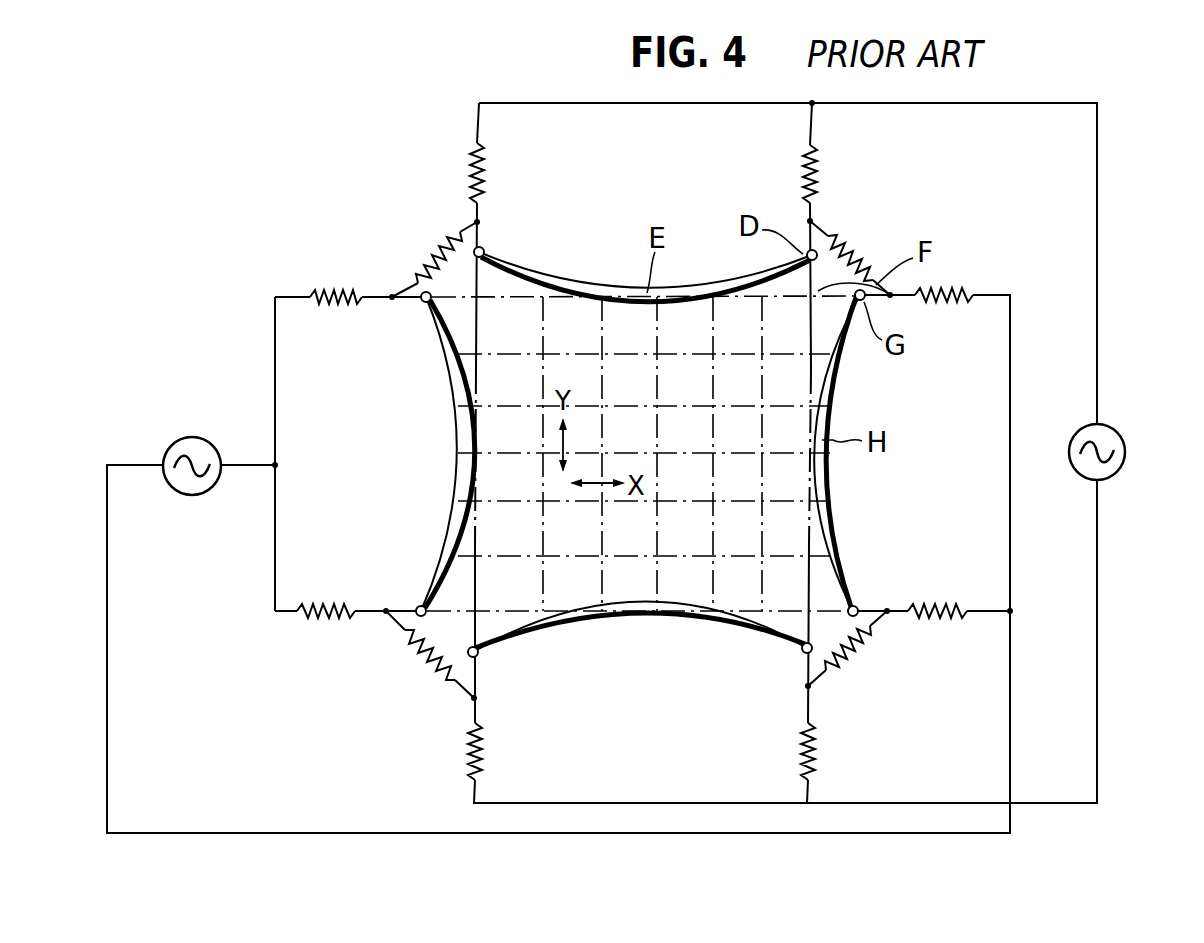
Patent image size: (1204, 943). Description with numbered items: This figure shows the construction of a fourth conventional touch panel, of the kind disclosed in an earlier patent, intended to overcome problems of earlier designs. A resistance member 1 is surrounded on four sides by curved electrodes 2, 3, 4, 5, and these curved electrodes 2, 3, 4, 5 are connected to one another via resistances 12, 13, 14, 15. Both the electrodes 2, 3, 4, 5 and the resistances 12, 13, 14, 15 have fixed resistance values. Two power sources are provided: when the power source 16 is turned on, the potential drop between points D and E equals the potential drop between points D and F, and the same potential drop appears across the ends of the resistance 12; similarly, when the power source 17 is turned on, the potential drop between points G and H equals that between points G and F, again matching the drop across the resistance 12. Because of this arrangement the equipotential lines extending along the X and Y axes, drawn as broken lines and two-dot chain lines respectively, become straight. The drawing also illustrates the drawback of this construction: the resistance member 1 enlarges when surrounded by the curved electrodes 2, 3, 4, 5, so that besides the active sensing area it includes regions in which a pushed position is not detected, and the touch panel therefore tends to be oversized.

The resistance member 1 is at (680, 569).
The electrode 2 is at (566, 626).
The electrode 3 is at (560, 285).
The electrode 4 is at (456, 370).
The electrode 5 is at (838, 512).
The resistance 12 is at (872, 262).
The resistance 13 is at (434, 252).
The resistance 14 is at (418, 670).
The resistance 15 is at (858, 648).
The power source 16 is at (1118, 470).
The power source 17 is at (190, 436).